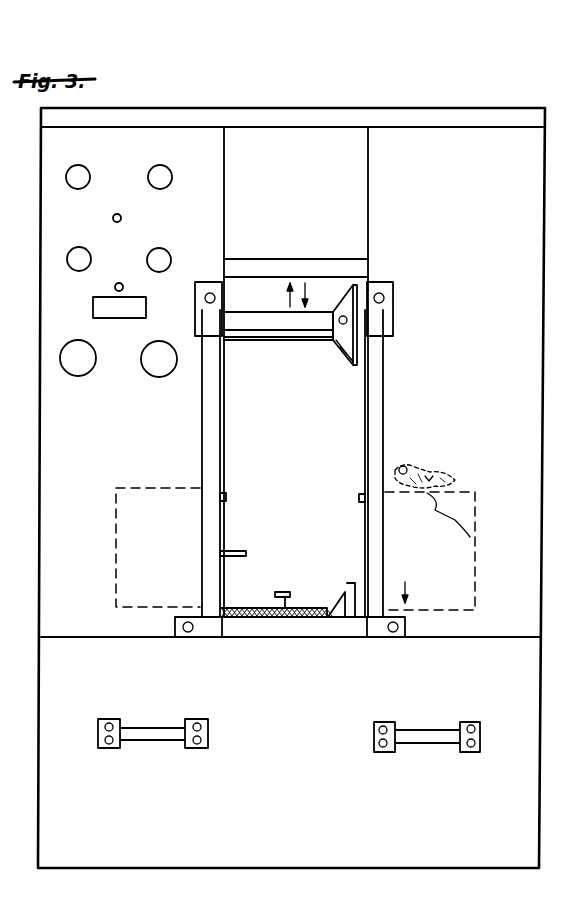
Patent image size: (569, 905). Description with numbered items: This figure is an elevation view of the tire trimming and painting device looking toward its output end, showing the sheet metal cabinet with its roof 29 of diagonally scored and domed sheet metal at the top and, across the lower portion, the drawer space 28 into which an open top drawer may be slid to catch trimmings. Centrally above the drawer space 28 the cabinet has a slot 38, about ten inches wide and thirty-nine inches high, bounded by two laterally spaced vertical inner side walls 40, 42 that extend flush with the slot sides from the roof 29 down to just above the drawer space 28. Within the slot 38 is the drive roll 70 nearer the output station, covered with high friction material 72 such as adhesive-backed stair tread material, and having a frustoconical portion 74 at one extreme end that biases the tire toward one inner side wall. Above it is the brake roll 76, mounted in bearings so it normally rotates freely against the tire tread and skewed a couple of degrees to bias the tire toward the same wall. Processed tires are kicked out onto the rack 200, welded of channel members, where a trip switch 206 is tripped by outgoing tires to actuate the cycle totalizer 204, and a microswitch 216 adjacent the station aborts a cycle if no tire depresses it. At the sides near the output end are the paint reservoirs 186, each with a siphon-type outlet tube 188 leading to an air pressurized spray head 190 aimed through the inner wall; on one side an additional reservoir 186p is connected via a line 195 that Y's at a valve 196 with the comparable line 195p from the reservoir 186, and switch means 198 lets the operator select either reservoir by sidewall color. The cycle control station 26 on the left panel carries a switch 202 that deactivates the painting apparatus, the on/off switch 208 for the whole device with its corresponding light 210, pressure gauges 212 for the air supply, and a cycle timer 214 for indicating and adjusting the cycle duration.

The cycle control station 26 is at (126, 139).
The drawer space 28 is at (295, 809).
The roof 29 is at (371, 82).
The slot 38 is at (333, 200).
The inner side wall 40 is at (222, 165).
The inner side wall 42 is at (368, 187).
The drive roll 70 is at (240, 603).
The high friction material 72 is at (255, 605).
The frustoconical portion 74 is at (342, 600).
The brake roll 76 is at (303, 335).
The paint reservoir 186 is at (123, 560).
The additional reservoir 186p is at (474, 500).
The siphon-type outlet tube 188 is at (390, 481).
The spray head 190 is at (228, 495).
The line 195 is at (420, 493).
The line 195p is at (452, 481).
The valve 196 is at (432, 474).
The switch means 198 is at (113, 288).
The rack 200 is at (210, 425).
The switch 202 is at (121, 218).
The cycle totalizer 204 is at (118, 318).
The trip switch 206 is at (300, 592).
The on/off switch 208 is at (99, 243).
The light 210 is at (182, 247).
The pressure gauge 212 is at (75, 365).
The cycle timer 214 is at (108, 195).
The microswitch 216 is at (253, 547).